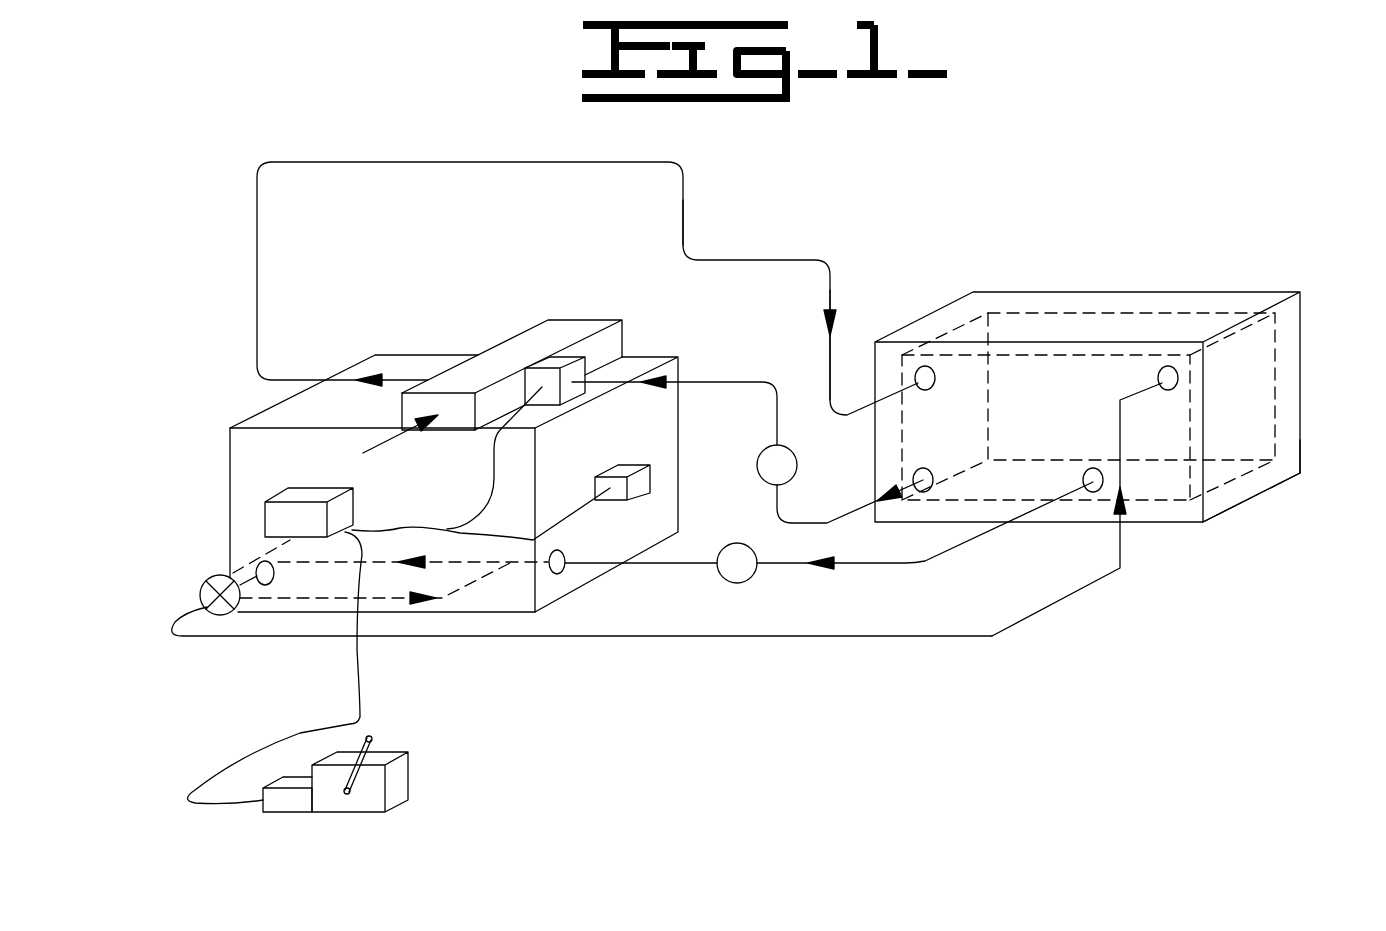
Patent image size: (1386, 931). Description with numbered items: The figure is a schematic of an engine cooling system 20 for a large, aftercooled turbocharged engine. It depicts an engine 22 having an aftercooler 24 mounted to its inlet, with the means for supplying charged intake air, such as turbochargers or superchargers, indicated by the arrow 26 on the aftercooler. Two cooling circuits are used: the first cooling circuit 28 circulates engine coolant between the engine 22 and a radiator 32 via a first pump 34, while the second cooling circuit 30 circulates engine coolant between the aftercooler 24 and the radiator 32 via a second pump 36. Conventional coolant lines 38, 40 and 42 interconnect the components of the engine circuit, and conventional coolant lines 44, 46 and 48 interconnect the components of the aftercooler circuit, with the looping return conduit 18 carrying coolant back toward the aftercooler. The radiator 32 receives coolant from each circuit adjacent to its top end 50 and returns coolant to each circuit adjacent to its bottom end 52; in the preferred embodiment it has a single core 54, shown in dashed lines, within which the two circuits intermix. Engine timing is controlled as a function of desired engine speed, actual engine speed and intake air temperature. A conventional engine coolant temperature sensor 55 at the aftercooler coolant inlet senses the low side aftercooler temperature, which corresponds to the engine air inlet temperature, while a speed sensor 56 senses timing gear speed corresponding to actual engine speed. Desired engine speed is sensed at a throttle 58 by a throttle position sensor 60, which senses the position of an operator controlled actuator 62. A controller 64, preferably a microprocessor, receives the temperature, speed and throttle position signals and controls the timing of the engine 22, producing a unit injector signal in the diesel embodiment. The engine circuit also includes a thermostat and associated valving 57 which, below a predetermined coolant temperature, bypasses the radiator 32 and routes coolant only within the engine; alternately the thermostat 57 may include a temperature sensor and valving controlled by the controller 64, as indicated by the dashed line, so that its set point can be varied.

The return conduit loop 18 is at (368, 162).
The engine cooling system schematic 20 is at (236, 278).
The engine 22 is at (230, 478).
The aftercooler 24 is at (504, 343).
The means for supplying charged intake air 26 is at (390, 440).
The cooling circuit 28 is at (428, 637).
The cooling circuit 30 is at (831, 300).
The radiator 32 is at (1280, 491).
The first pump 34 is at (740, 544).
The second pump 36 is at (760, 477).
The coolant line 38 is at (843, 638).
The coolant line 40 is at (947, 553).
The coolant line 42 is at (660, 566).
The coolant line 44 is at (684, 221).
The coolant line 46 is at (847, 513).
The coolant line 48 is at (742, 381).
The top end 50 is at (1300, 293).
The bottom end 52 is at (1203, 526).
The single core 54 is at (1015, 313).
The engine coolant temperature sensor 55 is at (570, 365).
The speed sensor 56 is at (635, 464).
The thermostat and associated valving 57 is at (200, 592).
The throttle 58 is at (410, 792).
The throttle position sensor 60 is at (287, 813).
The operator controlled actuator 62 is at (370, 737).
The controller 64 is at (265, 517).